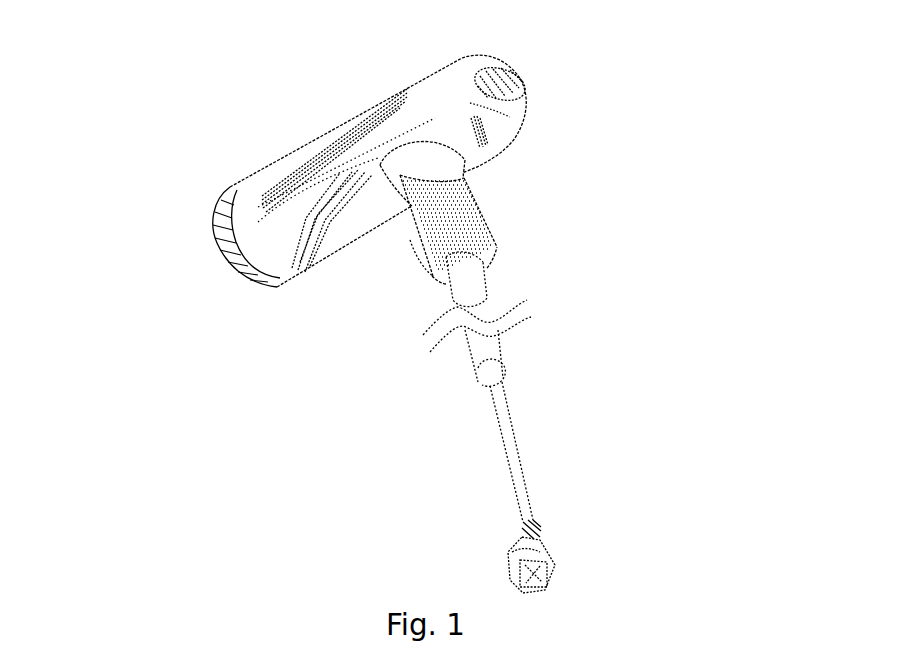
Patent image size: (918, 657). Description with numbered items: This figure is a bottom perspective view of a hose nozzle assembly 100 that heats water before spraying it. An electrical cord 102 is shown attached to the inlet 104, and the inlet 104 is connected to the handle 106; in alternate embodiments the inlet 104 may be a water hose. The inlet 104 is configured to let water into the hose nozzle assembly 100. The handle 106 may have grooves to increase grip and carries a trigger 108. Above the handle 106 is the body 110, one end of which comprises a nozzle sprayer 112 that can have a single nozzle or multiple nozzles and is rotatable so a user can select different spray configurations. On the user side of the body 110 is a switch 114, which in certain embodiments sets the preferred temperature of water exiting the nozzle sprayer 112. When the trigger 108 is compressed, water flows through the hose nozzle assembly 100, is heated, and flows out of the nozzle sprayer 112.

The hose nozzle assembly 100 is at (124, 77).
The electrical cord 102 is at (520, 467).
The inlet 104 is at (484, 289).
The handle 106 is at (480, 203).
The trigger 108 is at (408, 243).
The body 110 is at (382, 118).
The nozzle sprayer 112 is at (212, 228).
The switch 114 is at (520, 97).